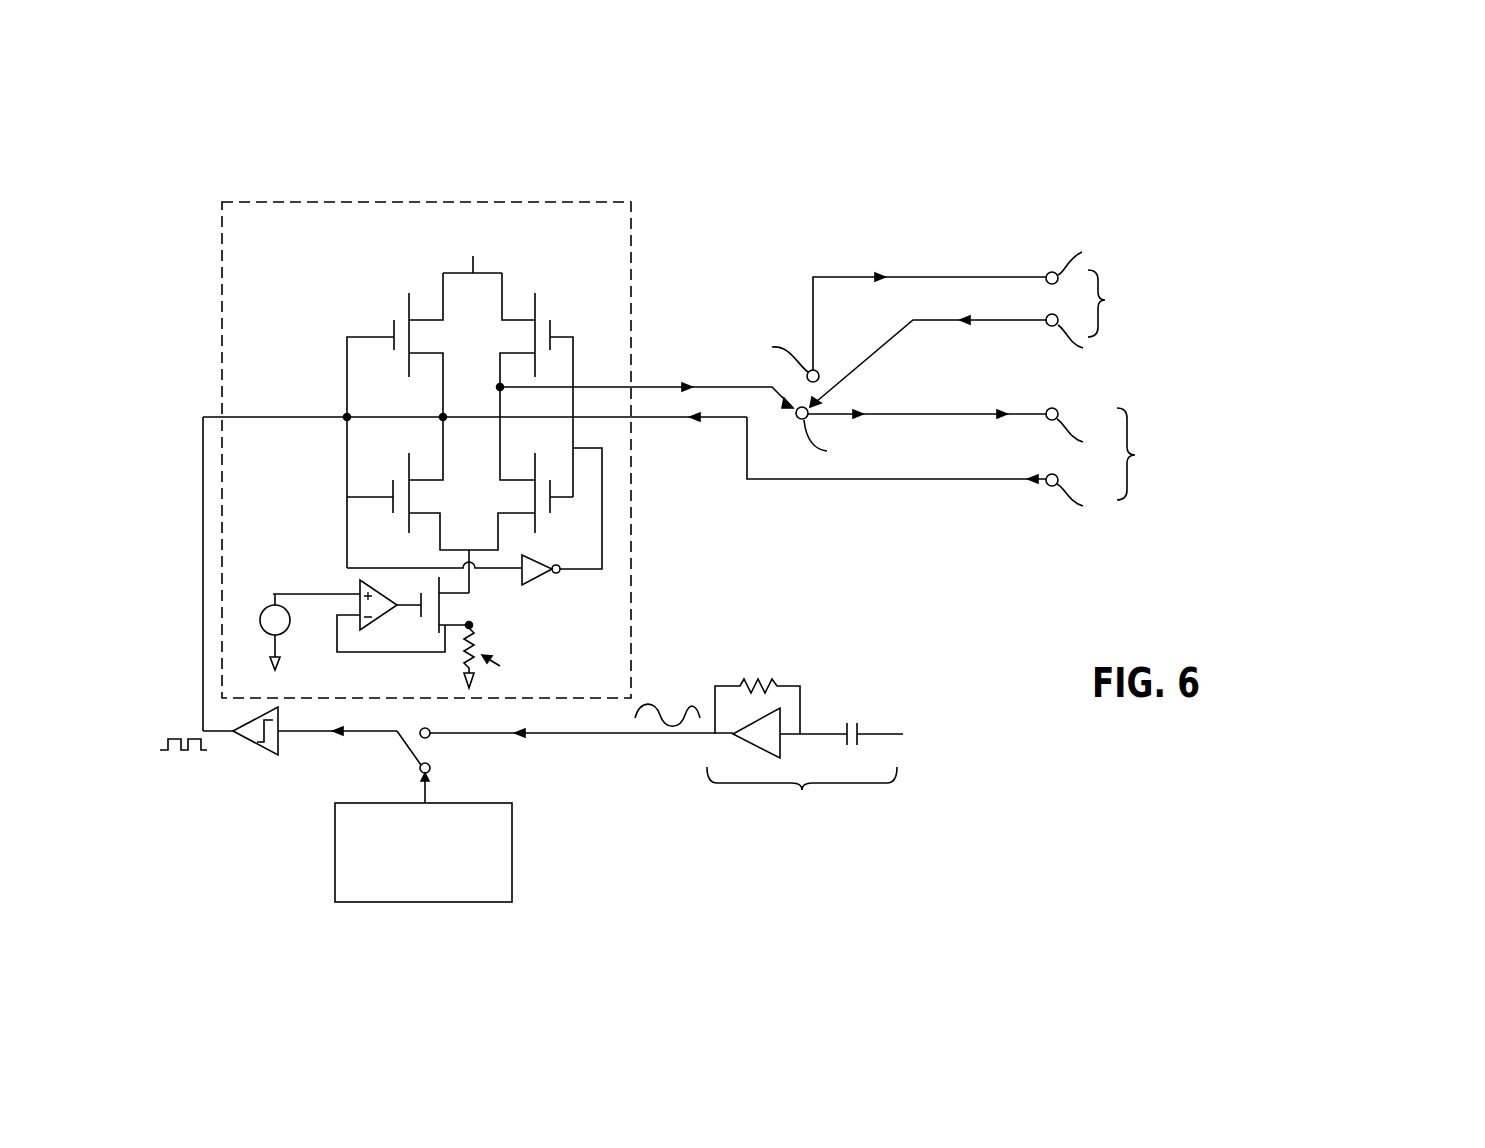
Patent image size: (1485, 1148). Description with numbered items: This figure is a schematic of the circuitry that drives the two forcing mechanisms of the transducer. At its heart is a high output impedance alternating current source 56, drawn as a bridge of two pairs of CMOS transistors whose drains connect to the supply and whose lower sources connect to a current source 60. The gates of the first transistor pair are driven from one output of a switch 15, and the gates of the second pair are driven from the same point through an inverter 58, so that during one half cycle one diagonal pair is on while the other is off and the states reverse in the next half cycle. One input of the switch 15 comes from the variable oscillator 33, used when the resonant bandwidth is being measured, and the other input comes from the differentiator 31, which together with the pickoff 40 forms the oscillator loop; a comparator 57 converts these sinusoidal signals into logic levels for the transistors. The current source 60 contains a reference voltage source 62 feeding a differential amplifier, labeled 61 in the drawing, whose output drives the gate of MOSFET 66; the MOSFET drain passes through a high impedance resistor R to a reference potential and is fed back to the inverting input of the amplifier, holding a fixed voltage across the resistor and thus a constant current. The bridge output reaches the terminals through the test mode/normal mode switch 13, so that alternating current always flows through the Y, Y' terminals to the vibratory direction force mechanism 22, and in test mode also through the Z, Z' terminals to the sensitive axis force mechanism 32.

The high output impedance alternating current source 56 is at (439, 201).
The inverter 58 is at (541, 579).
The MOSFET 66 is at (446, 604).
The operational amplifier 61 is at (360, 585).
The current source 60 is at (368, 660).
The reference voltage source 62 is at (264, 633).
The test mode/normal mode switch 13 is at (790, 403).
The sensitive axis force mechanism 32 is at (1239, 300).
The input vibratory direction force mechanism 22 is at (1254, 465).
The comparator 57 is at (258, 746).
The switch 15 is at (406, 750).
The variable oscillator 33 is at (512, 853).
The differentiator 31 is at (803, 752).
The vibratory axis output sensing mechanism 40 is at (854, 710).